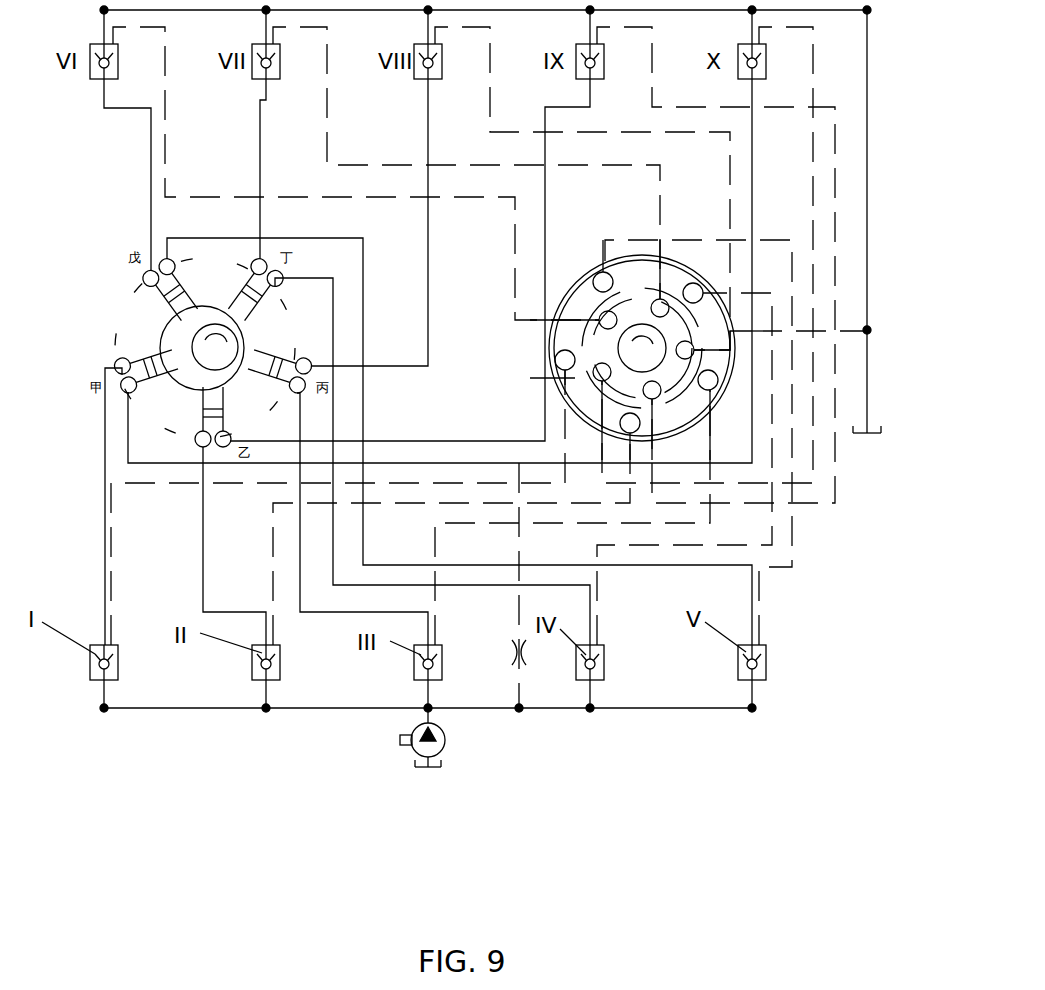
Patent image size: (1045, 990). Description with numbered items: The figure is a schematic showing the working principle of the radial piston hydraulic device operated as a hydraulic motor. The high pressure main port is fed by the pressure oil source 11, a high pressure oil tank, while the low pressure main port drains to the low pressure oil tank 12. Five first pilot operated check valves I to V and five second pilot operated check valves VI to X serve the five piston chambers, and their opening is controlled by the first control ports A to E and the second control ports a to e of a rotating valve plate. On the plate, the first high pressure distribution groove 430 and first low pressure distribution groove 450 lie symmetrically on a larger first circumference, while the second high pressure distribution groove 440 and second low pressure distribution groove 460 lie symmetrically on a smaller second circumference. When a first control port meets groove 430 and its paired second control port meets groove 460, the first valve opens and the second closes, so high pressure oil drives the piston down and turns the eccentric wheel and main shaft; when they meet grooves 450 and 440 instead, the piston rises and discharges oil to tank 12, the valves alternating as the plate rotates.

The pressure oil source 11 is at (441, 772).
The low pressure oil tank 12 is at (881, 434).
The first high pressure distribution groove 430 is at (741, 366).
The second high pressure distribution groove 440 is at (635, 302).
The first low pressure distribution groove 450 is at (665, 273).
The second low pressure distribution groove 460 is at (718, 380).